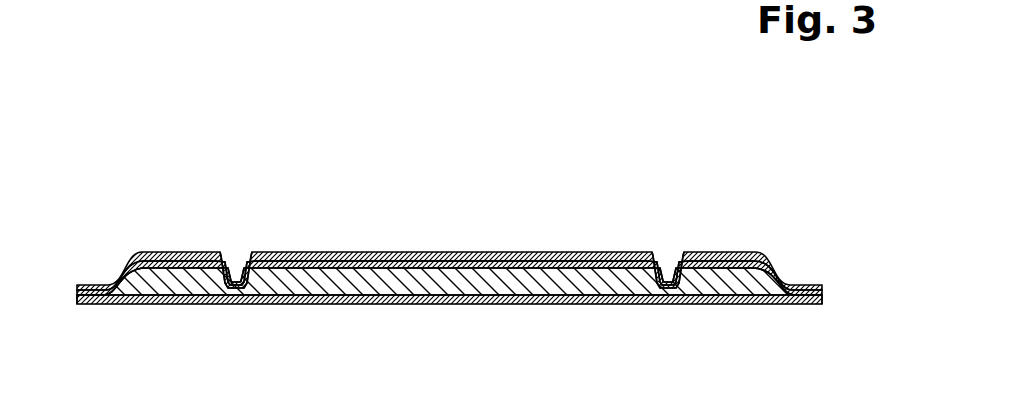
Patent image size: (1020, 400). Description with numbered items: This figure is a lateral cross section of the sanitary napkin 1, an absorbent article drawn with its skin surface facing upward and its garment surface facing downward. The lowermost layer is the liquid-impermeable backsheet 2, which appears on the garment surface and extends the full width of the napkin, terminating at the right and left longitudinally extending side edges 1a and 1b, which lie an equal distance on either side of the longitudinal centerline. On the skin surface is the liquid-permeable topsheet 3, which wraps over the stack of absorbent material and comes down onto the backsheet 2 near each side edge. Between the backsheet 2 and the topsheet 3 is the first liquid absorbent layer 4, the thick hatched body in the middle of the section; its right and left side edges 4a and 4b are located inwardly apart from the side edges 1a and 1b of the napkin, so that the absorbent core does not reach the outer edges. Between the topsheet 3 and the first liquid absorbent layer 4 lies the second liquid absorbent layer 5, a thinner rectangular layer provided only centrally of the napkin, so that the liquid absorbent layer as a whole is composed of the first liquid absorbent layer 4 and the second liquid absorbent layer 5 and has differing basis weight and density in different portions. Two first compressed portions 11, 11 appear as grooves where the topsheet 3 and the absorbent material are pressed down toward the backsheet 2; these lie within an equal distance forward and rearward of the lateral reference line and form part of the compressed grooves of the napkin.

The sanitary napkin 1 is at (591, 147).
The right side edge 1a is at (821, 302).
The left side edge 1b is at (73, 297).
The liquid-impermeable backsheet 2 is at (408, 302).
The liquid-permeable topsheet 3 is at (440, 256).
The first liquid absorbent layer 4 is at (328, 288).
The right side edge of first liquid absorbent layer 4a is at (781, 269).
The left side edge of first liquid absorbent layer 4b is at (121, 296).
The second liquid absorbent layer 5 is at (338, 264).
The first compressed portions 11 is at (241, 258).